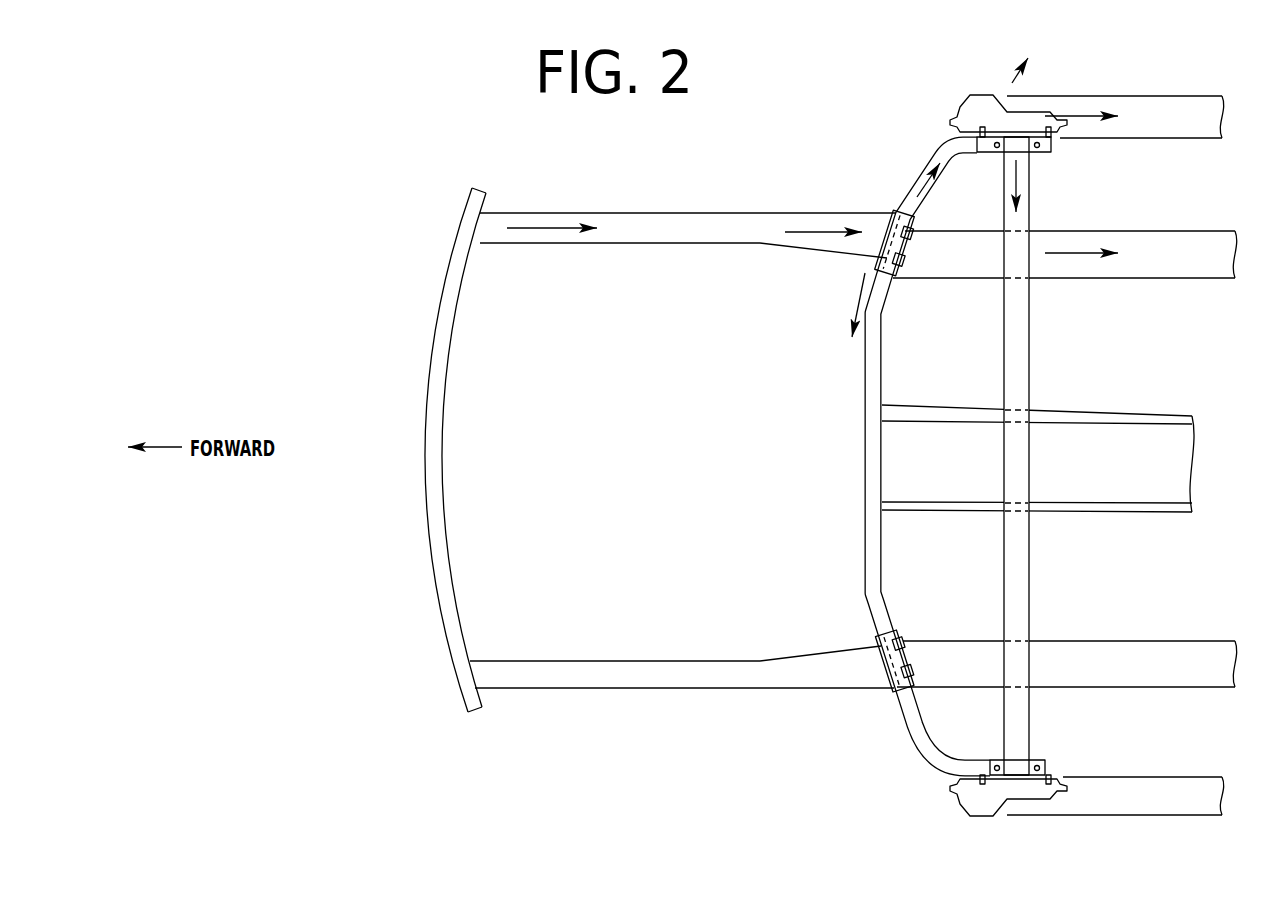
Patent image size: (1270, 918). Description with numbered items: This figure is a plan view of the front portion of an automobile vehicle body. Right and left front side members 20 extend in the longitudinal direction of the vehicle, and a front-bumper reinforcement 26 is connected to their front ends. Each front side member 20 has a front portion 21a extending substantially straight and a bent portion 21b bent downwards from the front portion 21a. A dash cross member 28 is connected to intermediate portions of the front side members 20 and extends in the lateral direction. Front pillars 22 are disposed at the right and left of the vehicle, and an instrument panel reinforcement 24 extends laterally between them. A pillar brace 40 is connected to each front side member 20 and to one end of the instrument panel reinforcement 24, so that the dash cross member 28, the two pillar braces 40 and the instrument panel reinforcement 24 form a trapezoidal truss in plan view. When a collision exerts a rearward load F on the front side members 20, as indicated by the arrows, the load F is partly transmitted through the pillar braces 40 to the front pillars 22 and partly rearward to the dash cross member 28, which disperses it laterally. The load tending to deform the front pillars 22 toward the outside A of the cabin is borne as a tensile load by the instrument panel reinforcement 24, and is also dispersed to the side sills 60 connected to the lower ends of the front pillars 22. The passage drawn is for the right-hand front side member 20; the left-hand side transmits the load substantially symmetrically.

The front side member 20 is at (707, 479).
The front portion 21a is at (620, 196).
The bent portion 21b is at (945, 252).
The front pillar 22 is at (978, 108).
The instrument panel reinforcement 24 is at (1020, 358).
The front-bumper reinforcement 26 is at (462, 245).
The dash cross member 28 is at (870, 378).
The pillar brace 40 is at (880, 438).
The side sill 60 is at (1185, 118).
The rearward load F is at (543, 228).
The outside of the cabin A is at (1017, 78).